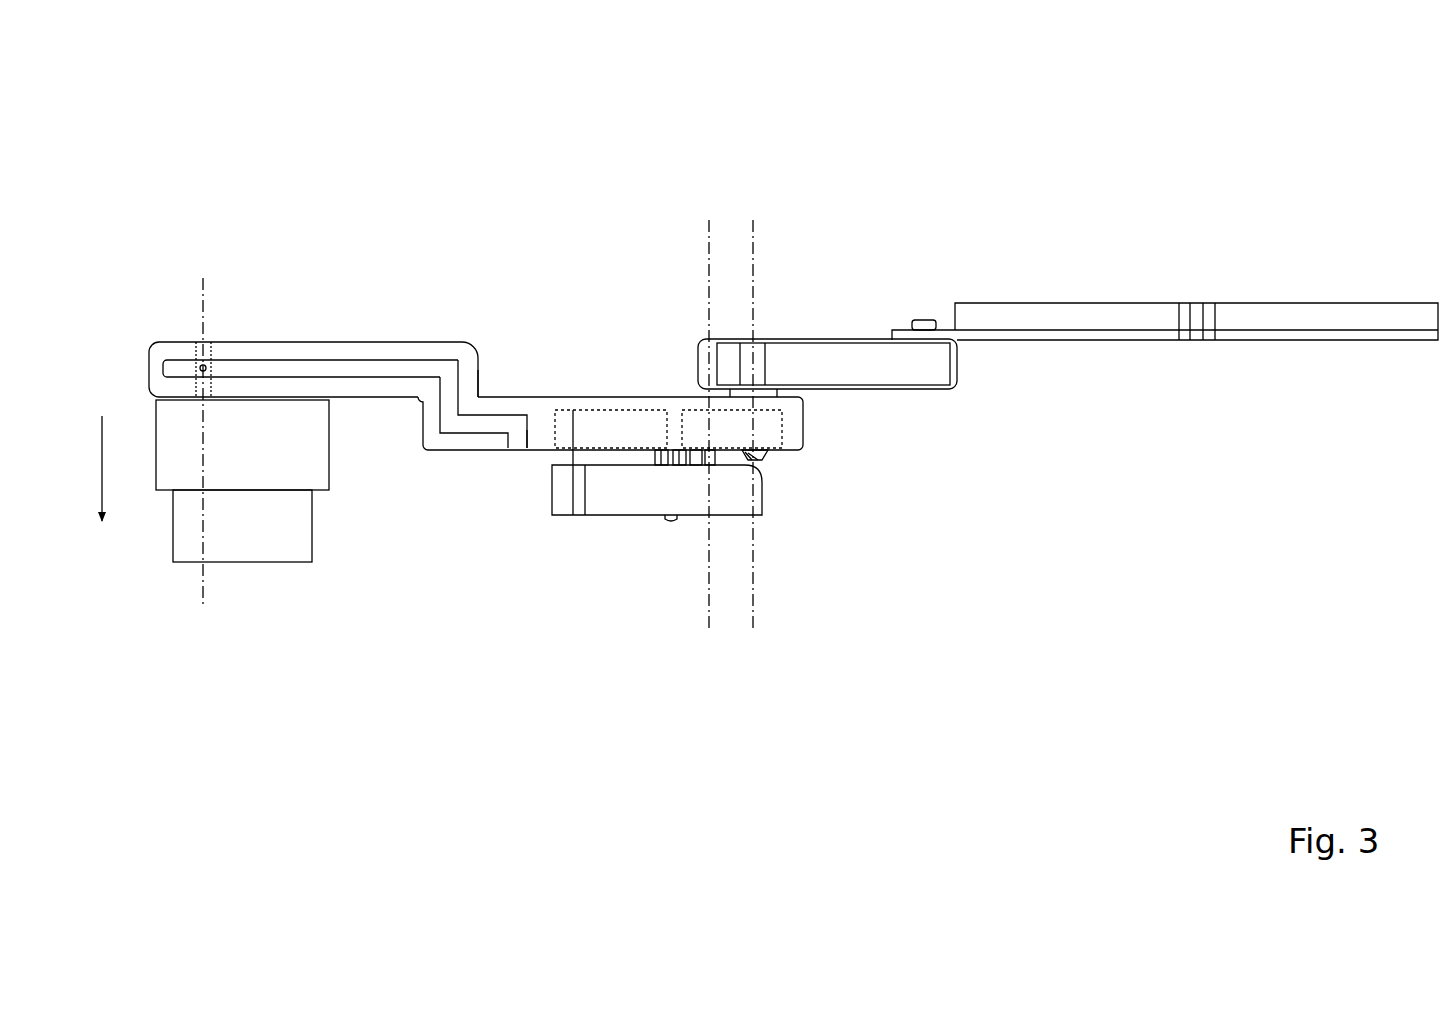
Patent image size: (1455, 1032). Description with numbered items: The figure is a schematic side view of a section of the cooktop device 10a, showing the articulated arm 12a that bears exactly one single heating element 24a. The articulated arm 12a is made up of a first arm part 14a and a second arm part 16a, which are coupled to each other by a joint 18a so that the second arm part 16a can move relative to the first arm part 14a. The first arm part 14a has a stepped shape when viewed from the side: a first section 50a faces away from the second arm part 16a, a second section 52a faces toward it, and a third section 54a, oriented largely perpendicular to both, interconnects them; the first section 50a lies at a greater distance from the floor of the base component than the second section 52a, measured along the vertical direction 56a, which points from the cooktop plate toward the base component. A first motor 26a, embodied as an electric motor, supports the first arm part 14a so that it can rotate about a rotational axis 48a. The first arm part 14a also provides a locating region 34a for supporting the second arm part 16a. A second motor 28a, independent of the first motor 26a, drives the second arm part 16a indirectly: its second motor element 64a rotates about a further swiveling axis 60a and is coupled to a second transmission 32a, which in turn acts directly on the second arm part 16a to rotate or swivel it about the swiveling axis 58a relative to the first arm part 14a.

The cooktop device 10a is at (1373, 192).
The articulated arm 12a is at (802, 166).
The first arm part 14a is at (447, 342).
The second arm part 16a is at (848, 338).
The joint 18a is at (726, 328).
The heating element 24a is at (1278, 318).
The first motor 26a is at (253, 567).
The second motor 28a is at (620, 526).
The second transmission 32a is at (783, 422).
The locating region 34a is at (600, 386).
The rotational axis 48a is at (203, 298).
The first section 50a is at (393, 341).
The second section 52a is at (645, 393).
The third section 54a is at (483, 389).
The vertical direction 56a is at (102, 472).
The swiveling axis 58a is at (755, 253).
The further swiveling axis 60a is at (716, 232).
The second motor element 64a is at (748, 467).